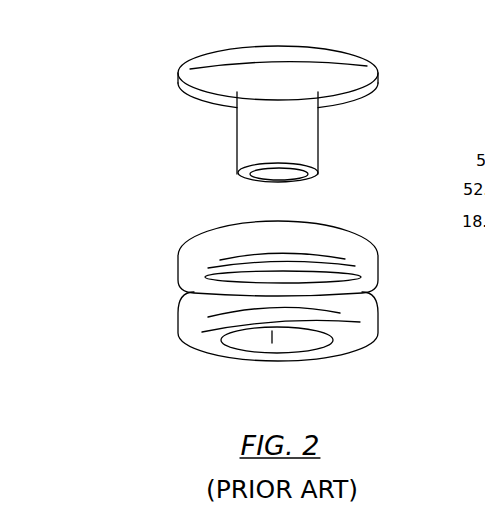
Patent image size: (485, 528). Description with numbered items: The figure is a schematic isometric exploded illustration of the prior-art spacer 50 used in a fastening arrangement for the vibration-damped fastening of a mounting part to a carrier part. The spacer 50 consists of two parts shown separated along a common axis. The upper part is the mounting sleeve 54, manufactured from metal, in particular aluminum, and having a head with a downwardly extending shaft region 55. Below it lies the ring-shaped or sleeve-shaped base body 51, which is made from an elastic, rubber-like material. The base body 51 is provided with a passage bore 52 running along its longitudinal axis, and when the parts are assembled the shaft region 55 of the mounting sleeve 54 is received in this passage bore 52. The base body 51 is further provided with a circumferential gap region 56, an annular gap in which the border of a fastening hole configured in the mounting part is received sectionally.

The spacer 50 is at (95, 58).
The mounting sleeve 54 is at (162, 58).
The shaft region 55 is at (298, 137).
The base body 51 is at (162, 219).
The gap region 56 is at (372, 295).
The passage bore 52 is at (293, 337).